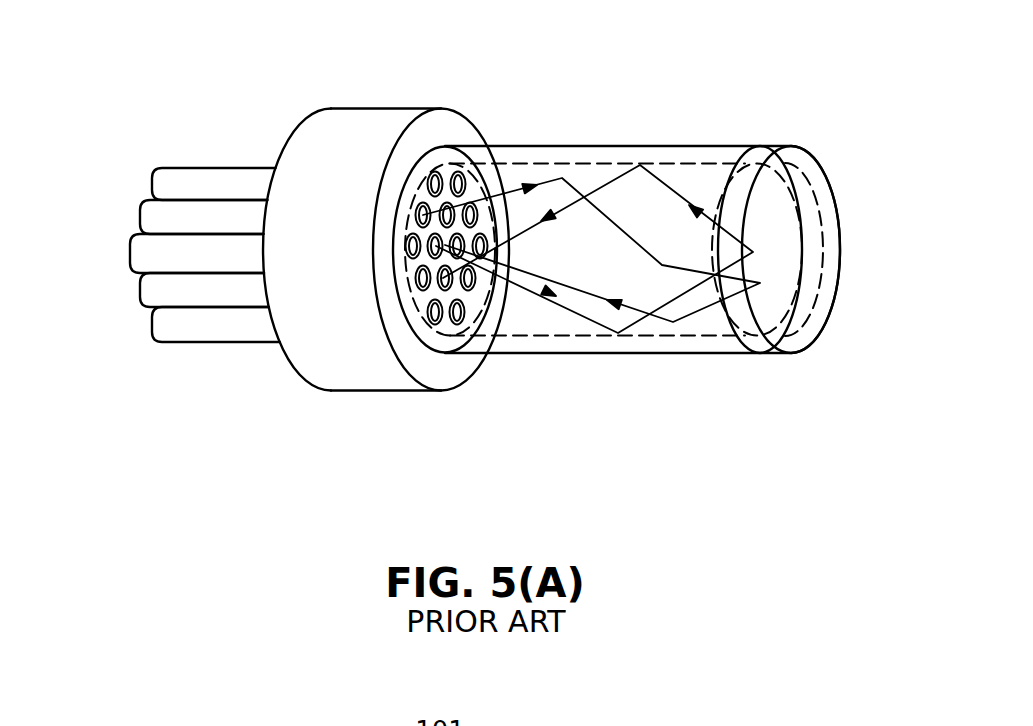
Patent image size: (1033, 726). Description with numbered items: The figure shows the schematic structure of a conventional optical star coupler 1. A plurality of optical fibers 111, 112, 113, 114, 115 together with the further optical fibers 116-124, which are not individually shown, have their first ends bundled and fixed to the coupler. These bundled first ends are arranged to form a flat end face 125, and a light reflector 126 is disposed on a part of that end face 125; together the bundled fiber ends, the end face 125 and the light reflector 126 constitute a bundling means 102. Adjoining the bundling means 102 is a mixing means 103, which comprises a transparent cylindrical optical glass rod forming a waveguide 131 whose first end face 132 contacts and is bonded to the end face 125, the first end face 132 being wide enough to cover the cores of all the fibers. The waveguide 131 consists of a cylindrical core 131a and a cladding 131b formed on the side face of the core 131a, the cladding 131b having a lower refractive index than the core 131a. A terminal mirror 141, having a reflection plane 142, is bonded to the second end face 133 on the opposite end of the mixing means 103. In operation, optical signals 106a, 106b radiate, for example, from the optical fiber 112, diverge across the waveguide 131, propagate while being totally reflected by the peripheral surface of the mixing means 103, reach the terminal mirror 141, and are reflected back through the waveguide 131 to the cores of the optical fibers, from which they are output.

The optical fiber coupling device 1 is at (163, 127).
The bundling means 102 is at (297, 465).
The mixing means 103 is at (653, 282).
The optical fiber 111 is at (160, 183).
The optical fiber 112 is at (150, 218).
The optical fiber 113 is at (140, 253).
The optical fiber 114 is at (152, 285).
The optical fiber 115 is at (162, 322).
The optical fibers 116-124 is at (219, 357).
The end face 125 is at (422, 202).
The light reflector 126 is at (470, 177).
The waveguide 131 is at (597, 259).
The cylindrical core 131a is at (570, 317).
The cladding 131b is at (540, 345).
The first end face 132 is at (492, 178).
The second end face 133 is at (738, 155).
The terminal mirror 141 is at (808, 333).
The reflection plane 142 is at (822, 310).
The optical signal 106a is at (565, 173).
The optical signal 106b is at (594, 302).